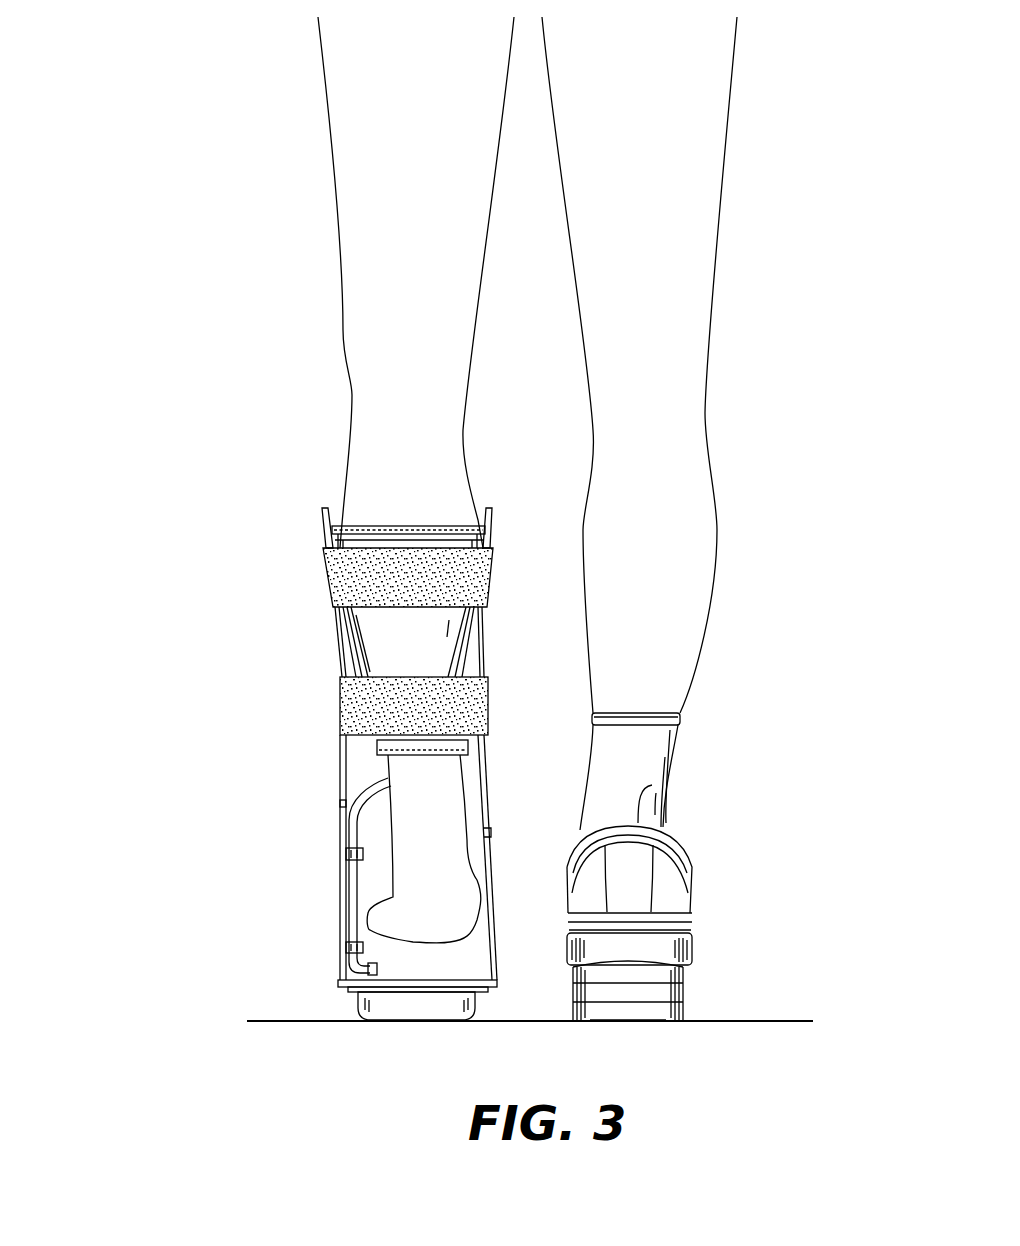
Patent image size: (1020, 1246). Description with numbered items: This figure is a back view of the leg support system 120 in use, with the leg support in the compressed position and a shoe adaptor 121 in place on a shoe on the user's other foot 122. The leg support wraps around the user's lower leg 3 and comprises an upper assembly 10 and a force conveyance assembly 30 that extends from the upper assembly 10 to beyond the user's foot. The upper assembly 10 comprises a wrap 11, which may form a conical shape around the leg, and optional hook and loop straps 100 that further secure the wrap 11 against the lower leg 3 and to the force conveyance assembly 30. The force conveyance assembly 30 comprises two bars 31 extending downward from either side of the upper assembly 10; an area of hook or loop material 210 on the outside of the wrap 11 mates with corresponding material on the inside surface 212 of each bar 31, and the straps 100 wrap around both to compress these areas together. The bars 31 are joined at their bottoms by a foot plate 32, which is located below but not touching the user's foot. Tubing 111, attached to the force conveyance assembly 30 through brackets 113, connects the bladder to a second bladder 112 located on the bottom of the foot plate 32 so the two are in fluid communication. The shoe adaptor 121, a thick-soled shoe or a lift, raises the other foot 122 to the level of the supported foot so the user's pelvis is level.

The leg support system 120 is at (168, 442).
The upper assembly 10 is at (160, 567).
The lower leg 3 is at (402, 508).
The inside surface 212 is at (328, 520).
The hook and loop straps 100 is at (343, 580).
The wrap 11 is at (378, 627).
The hook or loop material 210 is at (350, 643).
The force conveyance assembly 30 is at (243, 813).
The bars 31 is at (340, 825).
The brackets 113 is at (347, 852).
The tubing 111 is at (350, 910).
The foot plate 32 is at (392, 983).
The second bladder 112 is at (425, 1007).
The shoe adaptor 121 is at (667, 992).
The other foot 122 is at (653, 783).